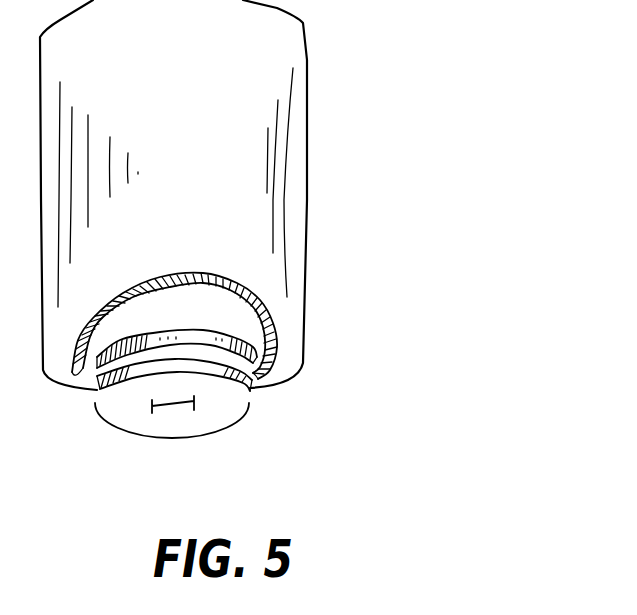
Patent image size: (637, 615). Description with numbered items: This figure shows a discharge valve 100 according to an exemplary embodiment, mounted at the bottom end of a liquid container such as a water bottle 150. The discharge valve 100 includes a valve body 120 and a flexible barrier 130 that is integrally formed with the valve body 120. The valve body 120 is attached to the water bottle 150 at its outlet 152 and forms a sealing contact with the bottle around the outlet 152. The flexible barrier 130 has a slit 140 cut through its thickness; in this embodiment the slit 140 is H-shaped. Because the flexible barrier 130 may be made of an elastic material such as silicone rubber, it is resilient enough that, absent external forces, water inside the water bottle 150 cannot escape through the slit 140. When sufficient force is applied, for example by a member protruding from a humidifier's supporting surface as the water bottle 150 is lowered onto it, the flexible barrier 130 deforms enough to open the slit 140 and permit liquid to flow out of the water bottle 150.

The discharge valve 100 is at (262, 448).
The valve body 120 is at (251, 396).
The flexible barrier 130 is at (213, 415).
The slit 140 is at (163, 408).
The water bottle 150 is at (308, 162).
The outlet 152 is at (103, 383).